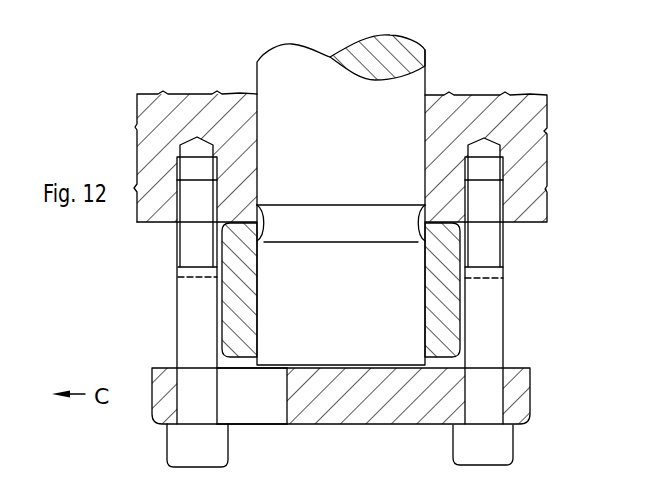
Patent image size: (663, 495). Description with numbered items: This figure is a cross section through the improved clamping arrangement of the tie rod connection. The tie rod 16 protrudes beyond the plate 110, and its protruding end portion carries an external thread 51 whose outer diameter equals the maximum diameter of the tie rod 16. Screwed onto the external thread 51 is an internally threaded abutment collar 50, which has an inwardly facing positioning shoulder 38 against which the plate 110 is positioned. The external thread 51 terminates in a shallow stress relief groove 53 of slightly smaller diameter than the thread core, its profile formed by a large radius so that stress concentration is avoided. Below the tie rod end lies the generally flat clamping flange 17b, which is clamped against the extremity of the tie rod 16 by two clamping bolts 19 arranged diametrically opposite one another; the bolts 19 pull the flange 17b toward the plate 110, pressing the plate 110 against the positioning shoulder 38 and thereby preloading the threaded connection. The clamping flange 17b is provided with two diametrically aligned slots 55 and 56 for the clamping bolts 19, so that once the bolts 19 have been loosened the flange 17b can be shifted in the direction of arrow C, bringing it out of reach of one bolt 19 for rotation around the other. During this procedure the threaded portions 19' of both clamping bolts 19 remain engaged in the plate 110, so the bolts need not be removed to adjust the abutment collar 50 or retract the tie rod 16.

The plate 110 is at (173, 110).
The tie rod 16 is at (395, 88).
The stress relief groove 53 is at (340, 212).
The positioning shoulder 38 is at (428, 222).
The external thread 51 is at (262, 287).
The abutment collar 50 is at (440, 297).
The threaded portion 19' is at (335, 203).
The clamping bolt 19 is at (332, 302).
The slot 56 is at (517, 396).
The clamping flange 17b is at (343, 393).
The slot 55 is at (252, 407).